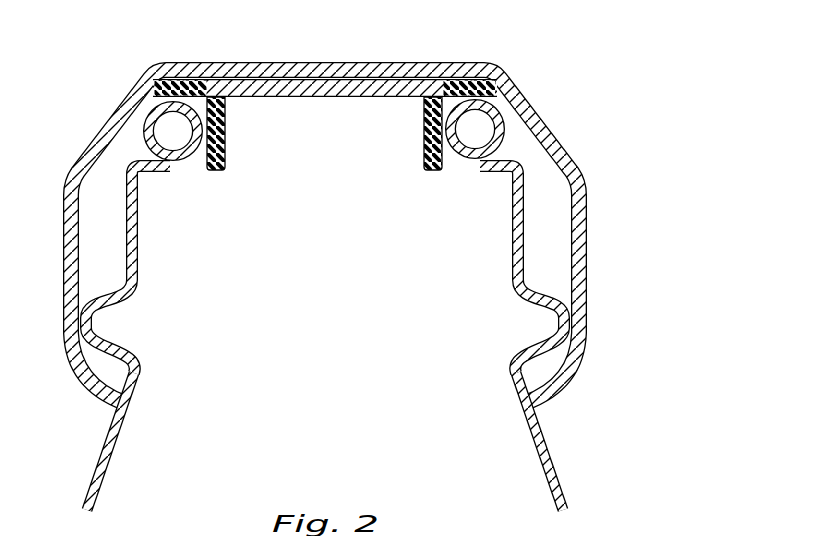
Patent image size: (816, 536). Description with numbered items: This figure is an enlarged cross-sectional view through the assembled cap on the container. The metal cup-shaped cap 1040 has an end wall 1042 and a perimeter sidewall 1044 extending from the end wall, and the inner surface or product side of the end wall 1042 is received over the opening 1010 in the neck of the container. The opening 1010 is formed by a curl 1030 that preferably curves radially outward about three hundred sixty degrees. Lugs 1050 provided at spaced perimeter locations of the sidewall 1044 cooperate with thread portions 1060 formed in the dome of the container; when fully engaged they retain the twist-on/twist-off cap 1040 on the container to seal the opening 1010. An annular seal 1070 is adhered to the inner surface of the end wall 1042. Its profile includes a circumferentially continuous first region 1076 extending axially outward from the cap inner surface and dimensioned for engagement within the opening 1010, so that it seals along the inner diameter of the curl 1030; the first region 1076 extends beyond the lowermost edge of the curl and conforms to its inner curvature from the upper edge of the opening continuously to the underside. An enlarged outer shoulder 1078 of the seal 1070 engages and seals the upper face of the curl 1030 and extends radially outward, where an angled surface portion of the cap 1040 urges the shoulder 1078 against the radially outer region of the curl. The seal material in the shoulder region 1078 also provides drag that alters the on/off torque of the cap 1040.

The opening 1010 is at (437, 128).
The curl 1030 is at (143, 138).
The cup-shaped cap 1040 is at (379, 210).
The end wall 1042 is at (352, 62).
The perimeter sidewall 1044 is at (582, 220).
The lugs 1050 is at (553, 390).
The thread portions 1060 is at (558, 278).
The annular seal 1070 is at (260, 92).
The first region 1076 is at (215, 173).
The outer shoulder 1078 is at (153, 92).